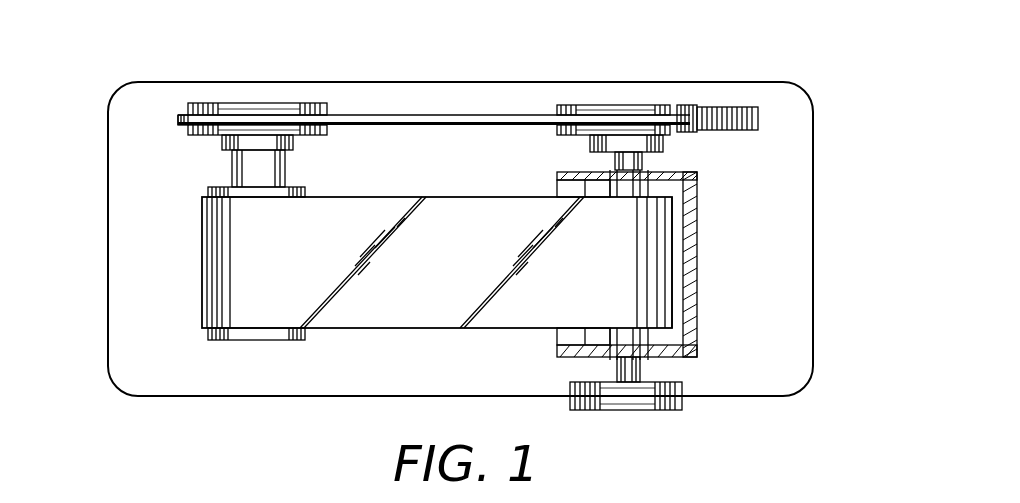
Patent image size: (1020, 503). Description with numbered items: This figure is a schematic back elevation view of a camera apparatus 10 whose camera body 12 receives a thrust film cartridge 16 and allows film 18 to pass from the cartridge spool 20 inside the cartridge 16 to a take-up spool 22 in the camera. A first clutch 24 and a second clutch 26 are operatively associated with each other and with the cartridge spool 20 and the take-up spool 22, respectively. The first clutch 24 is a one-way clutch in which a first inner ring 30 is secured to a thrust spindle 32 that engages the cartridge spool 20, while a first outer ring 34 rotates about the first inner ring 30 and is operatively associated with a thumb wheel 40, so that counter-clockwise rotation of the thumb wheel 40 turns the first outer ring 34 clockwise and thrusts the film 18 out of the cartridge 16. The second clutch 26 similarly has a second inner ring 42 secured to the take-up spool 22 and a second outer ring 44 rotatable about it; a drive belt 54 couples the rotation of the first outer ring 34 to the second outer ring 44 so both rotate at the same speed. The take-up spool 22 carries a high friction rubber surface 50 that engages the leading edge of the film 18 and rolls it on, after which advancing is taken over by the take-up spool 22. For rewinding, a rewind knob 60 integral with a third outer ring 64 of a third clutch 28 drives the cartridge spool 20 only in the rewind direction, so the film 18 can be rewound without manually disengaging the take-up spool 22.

The apparatus 10 is at (832, 190).
The camera body 12 is at (130, 84).
The thrust film cartridge 16 is at (698, 284).
The film 18 is at (370, 330).
The cartridge spool 20 is at (700, 334).
The take-up spool 22 is at (304, 190).
The first clutch 24 is at (622, 80).
The second clutch 26 is at (249, 80).
The third clutch 28 is at (617, 425).
The first inner ring 30 is at (665, 146).
The thrust spindle 32 is at (600, 160).
The first outer ring 34 is at (674, 103).
The thumb wheel 40 is at (727, 105).
The second inner ring 42 is at (218, 152).
The second outer ring 44 is at (192, 128).
The high friction rubber surface 50 is at (257, 334).
The drive belt 54 is at (422, 114).
The rewind knob 60 is at (566, 383).
The third outer ring 64 is at (682, 406).